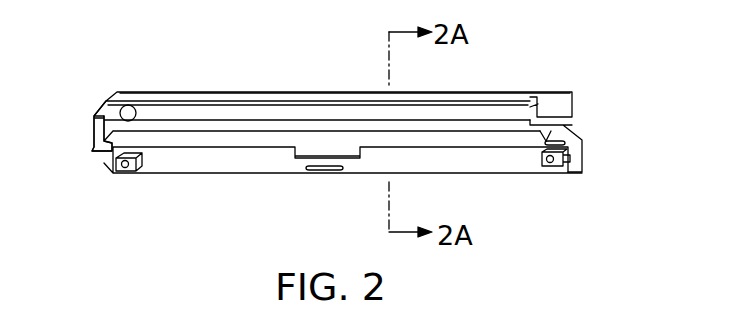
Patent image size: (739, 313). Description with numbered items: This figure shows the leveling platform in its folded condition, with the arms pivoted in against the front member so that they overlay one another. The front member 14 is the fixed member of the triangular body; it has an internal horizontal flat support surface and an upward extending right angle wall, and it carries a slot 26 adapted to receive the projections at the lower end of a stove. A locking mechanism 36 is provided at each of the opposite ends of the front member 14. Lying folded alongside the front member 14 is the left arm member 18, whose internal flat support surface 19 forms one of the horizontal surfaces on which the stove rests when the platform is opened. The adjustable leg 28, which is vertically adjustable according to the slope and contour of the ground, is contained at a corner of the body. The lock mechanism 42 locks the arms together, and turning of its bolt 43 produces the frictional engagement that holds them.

The front member 14 is at (246, 162).
The left arm member 18 is at (558, 96).
The flat support surface 19 is at (573, 123).
The slot 26 is at (320, 171).
The adjustable leg 28 is at (452, 98).
The locking mechanism 36 is at (122, 172).
The lock mechanism 42 is at (94, 100).
The bolt 43 is at (130, 105).